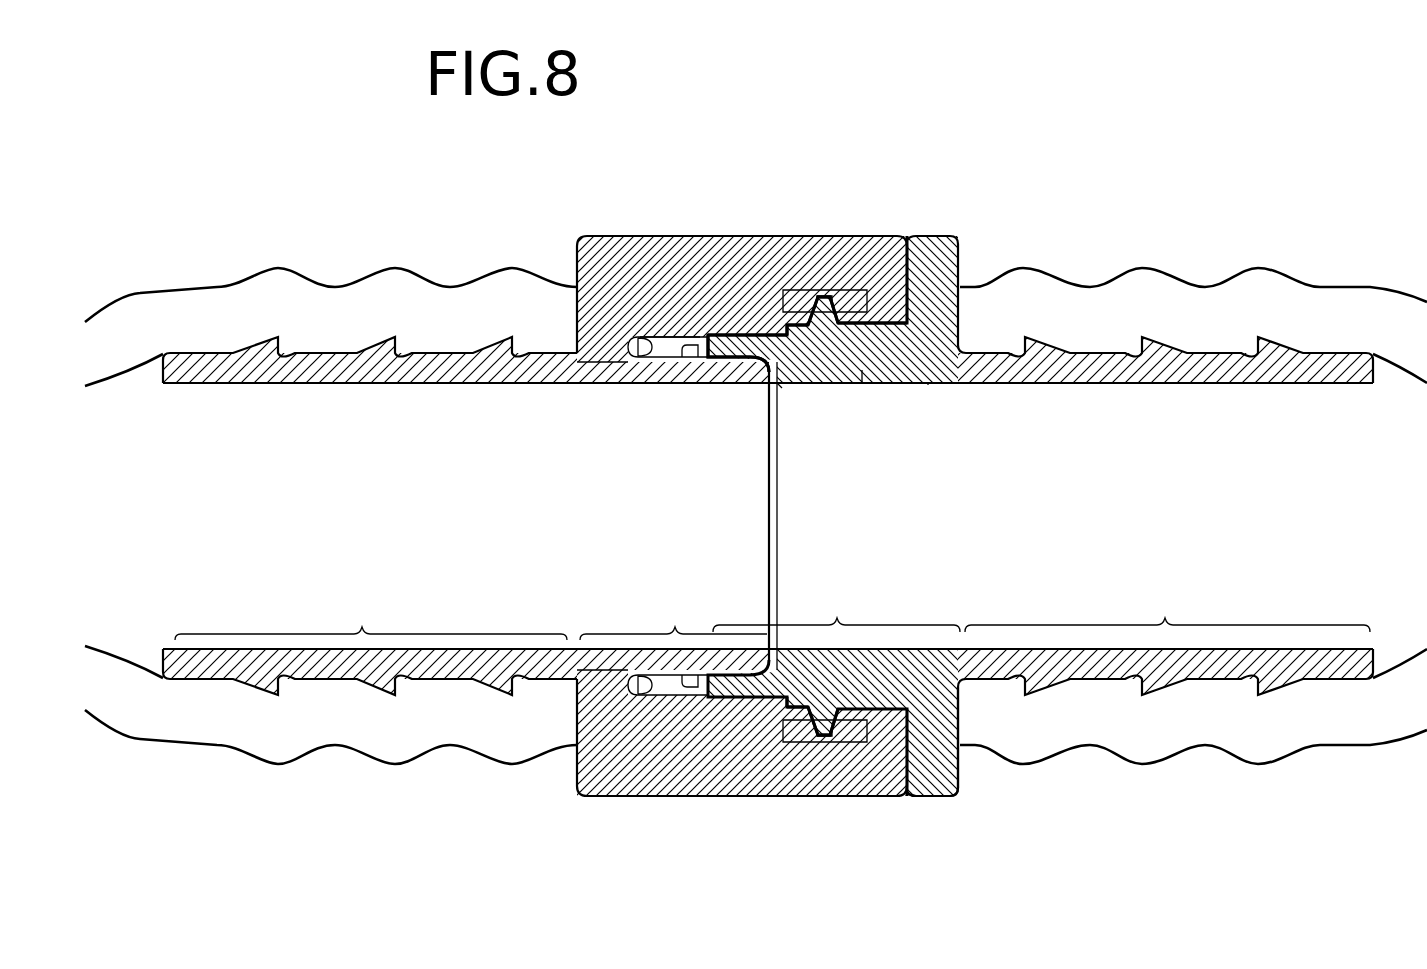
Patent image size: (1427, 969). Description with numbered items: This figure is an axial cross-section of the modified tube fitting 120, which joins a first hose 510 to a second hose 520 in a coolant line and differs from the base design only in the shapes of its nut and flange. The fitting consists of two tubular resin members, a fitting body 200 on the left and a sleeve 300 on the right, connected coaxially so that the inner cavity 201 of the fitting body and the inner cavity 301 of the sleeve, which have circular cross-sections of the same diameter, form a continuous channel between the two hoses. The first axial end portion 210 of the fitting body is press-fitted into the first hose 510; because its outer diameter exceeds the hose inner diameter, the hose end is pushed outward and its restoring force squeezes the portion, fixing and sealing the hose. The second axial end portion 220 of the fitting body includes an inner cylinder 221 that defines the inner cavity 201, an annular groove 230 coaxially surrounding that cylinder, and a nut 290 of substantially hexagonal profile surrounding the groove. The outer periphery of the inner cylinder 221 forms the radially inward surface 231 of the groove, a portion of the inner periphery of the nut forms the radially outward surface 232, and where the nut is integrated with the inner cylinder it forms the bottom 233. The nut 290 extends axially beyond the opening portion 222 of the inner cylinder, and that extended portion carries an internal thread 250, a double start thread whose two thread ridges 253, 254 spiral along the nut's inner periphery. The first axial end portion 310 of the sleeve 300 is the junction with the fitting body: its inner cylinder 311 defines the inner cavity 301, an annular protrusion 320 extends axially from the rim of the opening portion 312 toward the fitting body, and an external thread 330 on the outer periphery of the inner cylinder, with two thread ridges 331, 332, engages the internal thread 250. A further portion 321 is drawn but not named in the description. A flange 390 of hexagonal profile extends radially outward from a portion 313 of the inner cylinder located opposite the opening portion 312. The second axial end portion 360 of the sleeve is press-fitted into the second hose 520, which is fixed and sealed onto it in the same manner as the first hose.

The tube fitting 120 is at (1060, 152).
The fitting body 200 is at (562, 309).
The inner cavity 201 is at (366, 512).
The first axial end portion 210 is at (371, 617).
The second axial end portion 220 is at (672, 516).
The inner cylinder 221 is at (715, 352).
The opening portion 222 is at (762, 380).
The annular groove 230 is at (658, 337).
The radially inward surface 231 is at (690, 352).
The radially outward surface 232 is at (670, 345).
The bottom 233 is at (640, 350).
The internal thread 250 is at (825, 500).
The thread ridge 253 is at (790, 313).
The thread ridge 254 is at (840, 720).
The nut 290 is at (783, 236).
The sleeve 300 is at (974, 309).
The inner cavity 301 is at (1228, 532).
The first axial end portion 310 is at (836, 610).
The inner cylinder 311 is at (862, 370).
The opening portion 312 is at (782, 388).
The portion 313 is at (928, 385).
The annular protrusion 320 is at (745, 362).
The projection tip 321 is at (690, 694).
The external thread 330 is at (859, 345).
The thread ridge 331 is at (893, 287).
The thread ridge 332 is at (807, 718).
The second axial end portion 360 is at (1167, 611).
The flange 390 is at (933, 798).
The first hose 510 is at (232, 278).
The second hose 520 is at (1262, 272).